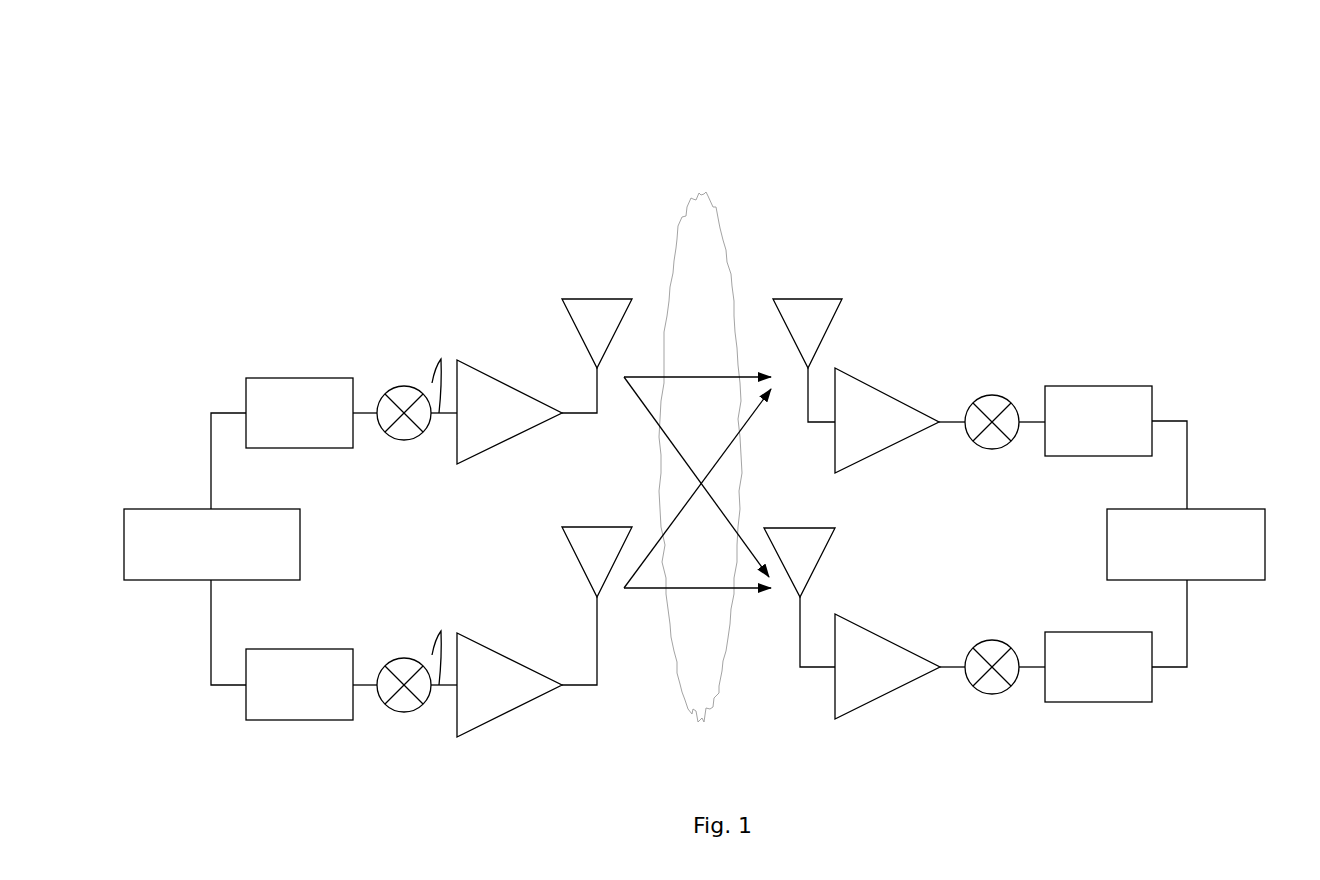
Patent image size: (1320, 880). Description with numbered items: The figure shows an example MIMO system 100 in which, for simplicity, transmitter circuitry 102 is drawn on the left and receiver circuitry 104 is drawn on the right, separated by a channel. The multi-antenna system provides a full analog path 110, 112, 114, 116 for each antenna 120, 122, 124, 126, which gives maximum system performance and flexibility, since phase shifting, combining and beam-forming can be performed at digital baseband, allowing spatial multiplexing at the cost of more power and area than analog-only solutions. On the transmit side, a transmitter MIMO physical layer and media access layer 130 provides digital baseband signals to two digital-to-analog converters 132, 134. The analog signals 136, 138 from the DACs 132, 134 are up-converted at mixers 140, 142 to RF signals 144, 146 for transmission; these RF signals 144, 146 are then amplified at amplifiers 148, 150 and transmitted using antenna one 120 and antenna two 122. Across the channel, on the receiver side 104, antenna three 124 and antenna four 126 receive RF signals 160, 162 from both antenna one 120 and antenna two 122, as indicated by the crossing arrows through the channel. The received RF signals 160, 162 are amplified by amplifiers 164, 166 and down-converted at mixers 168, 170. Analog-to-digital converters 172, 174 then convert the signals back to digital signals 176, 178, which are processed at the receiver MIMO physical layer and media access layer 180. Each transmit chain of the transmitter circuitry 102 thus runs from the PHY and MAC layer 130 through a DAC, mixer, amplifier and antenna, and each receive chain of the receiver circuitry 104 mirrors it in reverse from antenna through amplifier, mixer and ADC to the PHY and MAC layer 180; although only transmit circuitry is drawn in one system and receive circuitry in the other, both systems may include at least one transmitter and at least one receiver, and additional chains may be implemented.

The MIMO system 100 is at (228, 190).
The transmitter circuitry 102 is at (360, 325).
The receiver circuitry 104 is at (1080, 325).
The full analog path 110 is at (193, 685).
The full analog path 112 is at (186, 404).
The full analog path 114 is at (1220, 667).
The full analog path 116 is at (1225, 415).
The antenna 1 120 is at (593, 520).
The antenna 2 122 is at (580, 265).
The antenna 3 124 is at (810, 500).
The antenna 4 126 is at (806, 265).
The transmitter MIMO PHY layer and MAC layer 130 is at (300, 543).
The digital-to-analog converter 132 is at (305, 649).
The digital-to-analog converter 134 is at (305, 378).
The analog signal 136 is at (363, 676).
The analog signal 138 is at (363, 402).
The mixer 140 is at (404, 712).
The mixer 142 is at (405, 440).
The RF signal 144 is at (432, 652).
The RF signal 146 is at (432, 380).
The amplifier 148 is at (493, 718).
The amplifier 150 is at (490, 376).
The RF signal 160 is at (740, 594).
The RF signal 162 is at (770, 398).
The amplifier 164 is at (893, 695).
The amplifier 166 is at (893, 395).
The mixer 168 is at (997, 640).
The mixer 170 is at (990, 449).
The analog-to-digital converter 172 is at (1105, 703).
The analog-to-digital converter 174 is at (1092, 458).
The digital signal 176 is at (1185, 632).
The digital signal 178 is at (1185, 460).
The receiver MIMO PHY layer and MAC layer 180 is at (1265, 545).